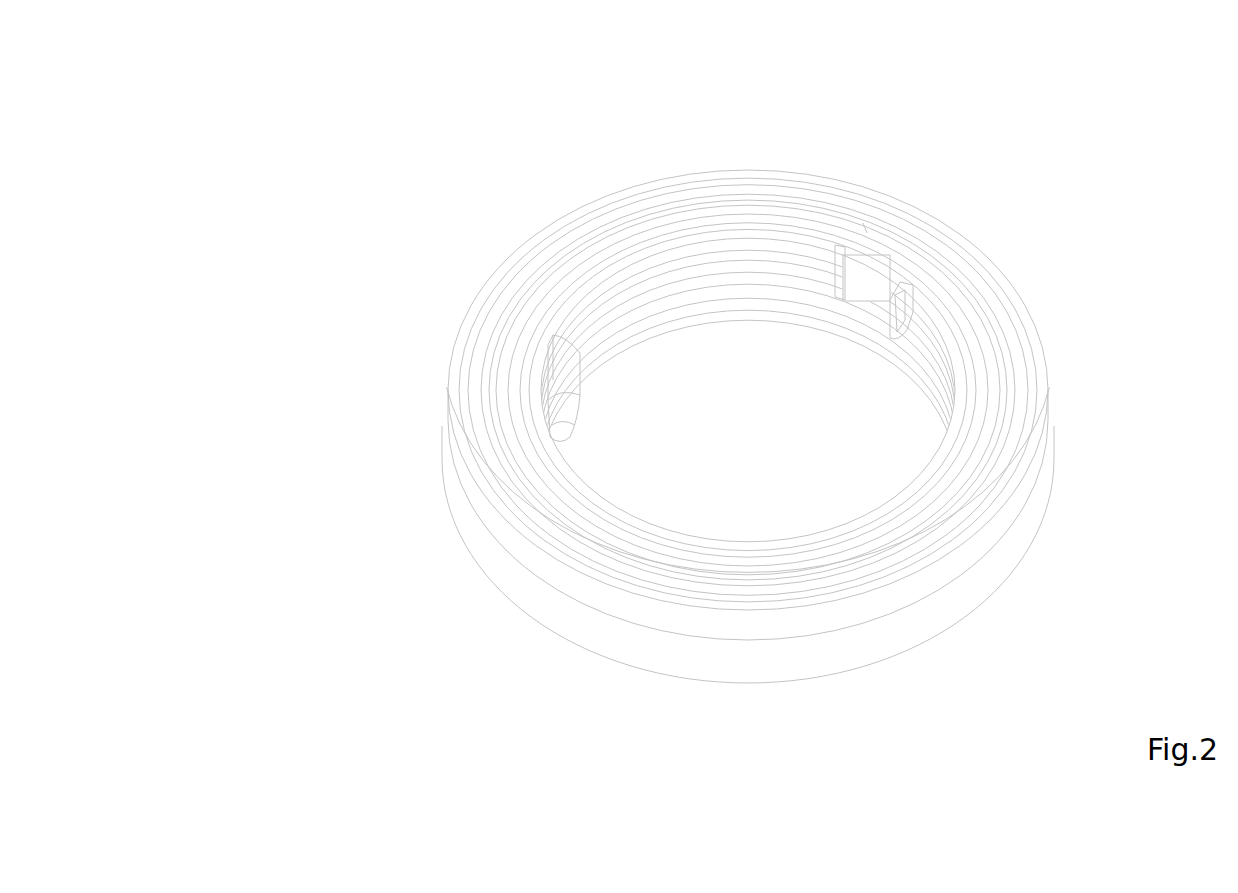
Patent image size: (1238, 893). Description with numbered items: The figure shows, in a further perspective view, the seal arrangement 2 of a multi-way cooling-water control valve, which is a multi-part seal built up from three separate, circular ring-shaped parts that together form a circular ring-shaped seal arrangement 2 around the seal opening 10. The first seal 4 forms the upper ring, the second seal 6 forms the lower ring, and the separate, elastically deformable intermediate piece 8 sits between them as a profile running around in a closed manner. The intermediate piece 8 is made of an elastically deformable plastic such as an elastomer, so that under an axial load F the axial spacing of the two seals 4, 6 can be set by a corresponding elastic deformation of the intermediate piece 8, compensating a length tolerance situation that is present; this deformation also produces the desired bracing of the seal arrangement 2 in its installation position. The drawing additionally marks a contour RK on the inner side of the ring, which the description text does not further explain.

The seal arrangement 2 is at (350, 226).
The first seal 4 is at (1048, 397).
The second seal 6 is at (1023, 535).
The intermediate piece 8 is at (1002, 508).
The seal opening 10 is at (783, 334).
The axial load F is at (745, 198).
The latching contour RK is at (868, 280).